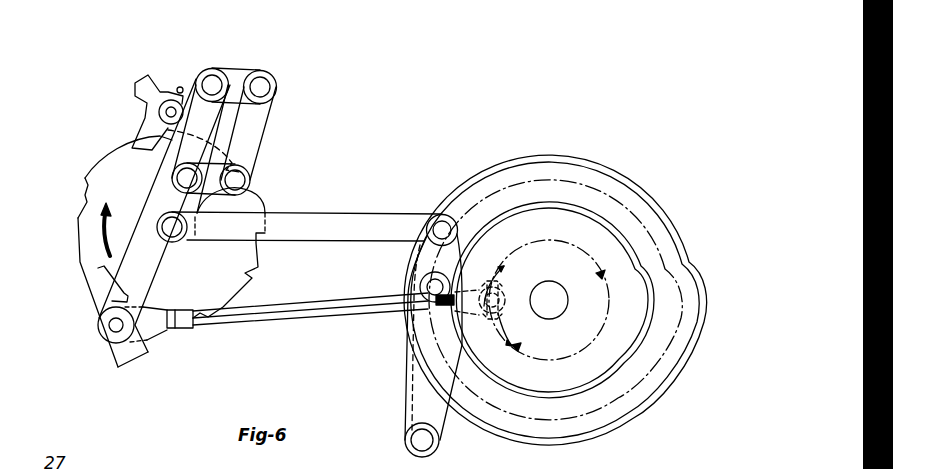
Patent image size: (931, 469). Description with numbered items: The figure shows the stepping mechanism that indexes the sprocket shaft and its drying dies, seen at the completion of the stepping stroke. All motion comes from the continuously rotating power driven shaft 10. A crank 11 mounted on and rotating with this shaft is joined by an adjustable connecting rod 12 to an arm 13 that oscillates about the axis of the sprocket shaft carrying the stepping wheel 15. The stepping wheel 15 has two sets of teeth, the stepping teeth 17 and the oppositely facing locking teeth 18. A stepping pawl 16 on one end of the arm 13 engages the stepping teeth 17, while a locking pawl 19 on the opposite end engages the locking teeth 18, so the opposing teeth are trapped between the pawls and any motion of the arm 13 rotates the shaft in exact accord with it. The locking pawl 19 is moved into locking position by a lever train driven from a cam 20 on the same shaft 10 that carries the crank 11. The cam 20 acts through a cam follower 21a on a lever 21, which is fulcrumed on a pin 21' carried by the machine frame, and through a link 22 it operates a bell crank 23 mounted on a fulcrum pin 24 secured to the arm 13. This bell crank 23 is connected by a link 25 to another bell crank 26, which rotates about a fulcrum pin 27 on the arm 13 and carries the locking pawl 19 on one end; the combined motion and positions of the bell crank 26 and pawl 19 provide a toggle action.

The power driven shaft 10 is at (537, 290).
The crank 11 is at (488, 280).
The adjustable connecting rod 12 is at (298, 311).
The arm 13 is at (148, 241).
The stepping wheel 15 is at (92, 245).
The stepping pawl 16 is at (95, 300).
The stepping teeth 17 is at (98, 270).
The locking teeth 18 is at (178, 170).
The locking pawl 19 is at (157, 122).
The cam 20 is at (523, 178).
The lever 21 is at (428, 276).
The pin 21' is at (443, 446).
The cam follower 21a is at (428, 285).
The link 22 is at (348, 227).
The bell crank 23 is at (172, 202).
The fulcrum pin 24 is at (170, 176).
The link 25 is at (155, 117).
The bell crank 26 is at (230, 70).
The fulcrum pin 27 is at (197, 80).